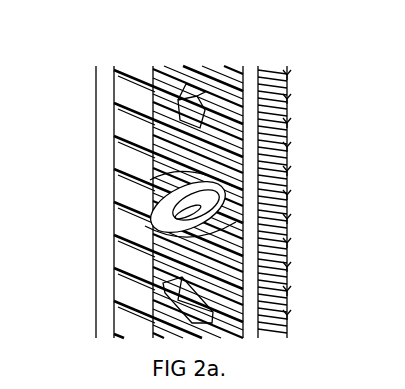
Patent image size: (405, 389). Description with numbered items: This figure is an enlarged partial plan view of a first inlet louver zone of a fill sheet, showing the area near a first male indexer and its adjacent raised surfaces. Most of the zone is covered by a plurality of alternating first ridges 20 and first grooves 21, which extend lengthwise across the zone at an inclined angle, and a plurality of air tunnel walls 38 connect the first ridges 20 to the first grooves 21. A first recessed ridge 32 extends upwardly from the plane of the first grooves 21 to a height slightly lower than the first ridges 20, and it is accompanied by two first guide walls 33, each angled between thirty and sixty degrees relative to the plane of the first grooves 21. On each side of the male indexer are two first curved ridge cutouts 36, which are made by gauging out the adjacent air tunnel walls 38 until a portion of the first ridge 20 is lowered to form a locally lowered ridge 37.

The first ridge 20 is at (282, 262).
The first groove 21 is at (237, 238).
The first recessed ridge 32 is at (203, 105).
The first guide wall 33 is at (192, 107).
The first curved ridge cutout 36 is at (168, 173).
The locally lowered ridge 37 is at (168, 282).
The air tunnel wall 38 is at (238, 226).